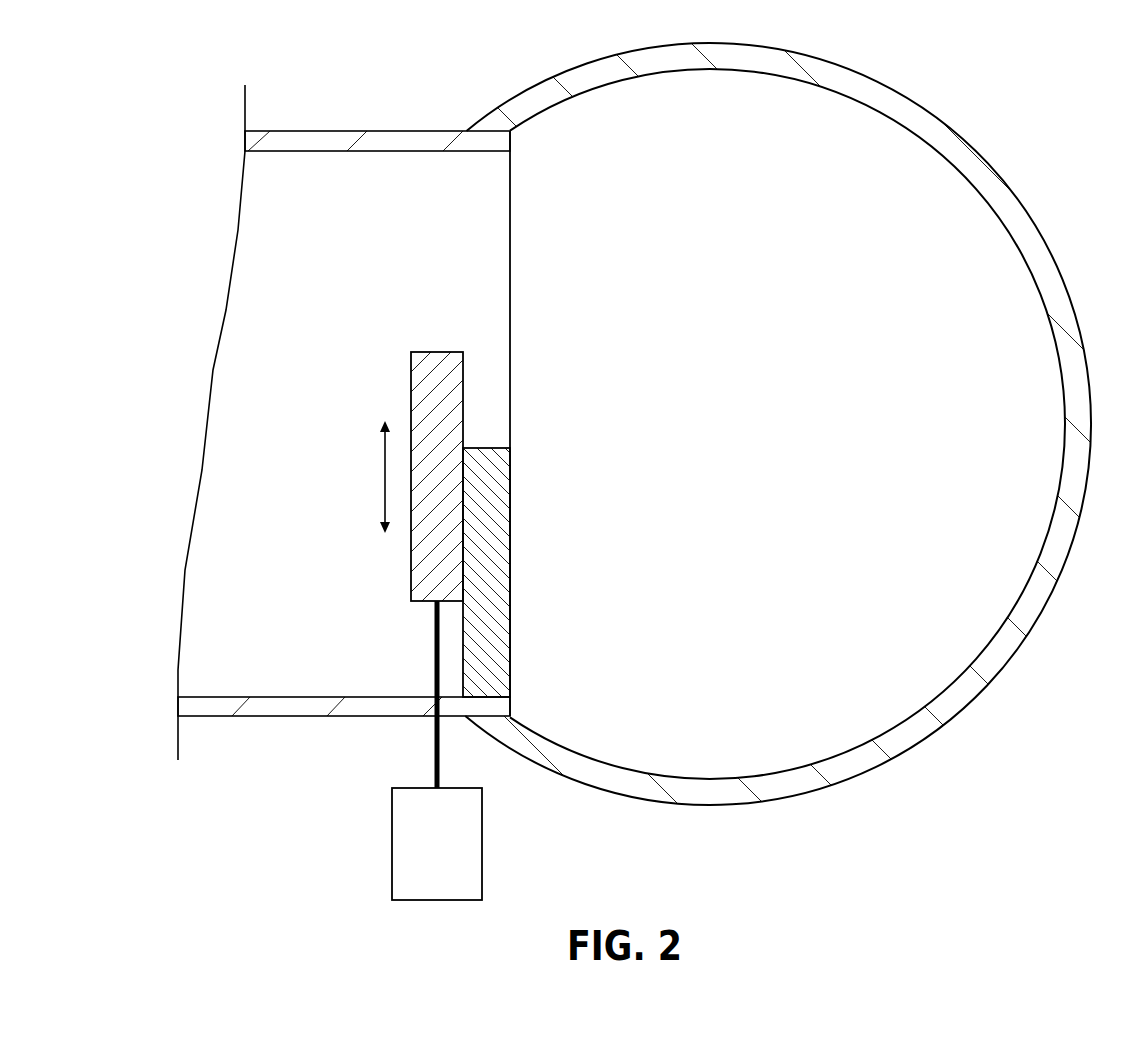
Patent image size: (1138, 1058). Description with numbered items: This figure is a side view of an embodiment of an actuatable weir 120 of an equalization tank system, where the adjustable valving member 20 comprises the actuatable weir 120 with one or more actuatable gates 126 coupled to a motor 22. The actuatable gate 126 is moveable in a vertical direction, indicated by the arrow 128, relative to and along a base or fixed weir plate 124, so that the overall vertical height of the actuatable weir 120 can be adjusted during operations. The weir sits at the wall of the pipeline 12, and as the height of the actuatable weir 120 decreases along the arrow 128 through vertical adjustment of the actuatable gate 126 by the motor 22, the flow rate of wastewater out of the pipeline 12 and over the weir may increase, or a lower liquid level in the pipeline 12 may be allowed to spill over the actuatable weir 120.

The pipeline 12 is at (995, 168).
The actuatable weir 120 is at (344, 422).
The adjustable valving member 20 is at (383, 343).
The fixed weir plate 124 is at (512, 522).
The actuatable gate 126 is at (440, 352).
The arrow 128 is at (385, 470).
The motor 22 is at (392, 838).